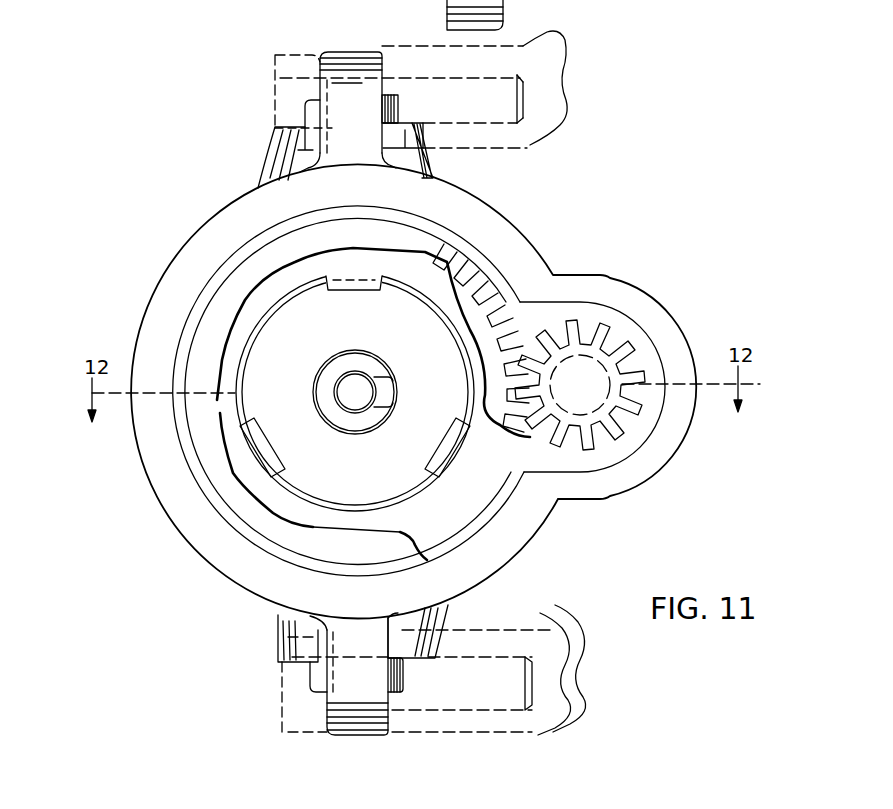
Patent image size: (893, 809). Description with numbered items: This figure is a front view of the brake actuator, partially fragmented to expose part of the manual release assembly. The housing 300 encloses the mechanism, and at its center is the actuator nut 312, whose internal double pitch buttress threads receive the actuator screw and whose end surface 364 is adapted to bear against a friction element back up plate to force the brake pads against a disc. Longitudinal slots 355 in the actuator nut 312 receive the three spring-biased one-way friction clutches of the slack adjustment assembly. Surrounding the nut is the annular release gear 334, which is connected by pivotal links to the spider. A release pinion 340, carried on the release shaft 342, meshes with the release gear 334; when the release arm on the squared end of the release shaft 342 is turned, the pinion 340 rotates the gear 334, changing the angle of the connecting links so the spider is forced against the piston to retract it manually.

The housing 300 is at (533, 534).
The actuator nut 312 is at (220, 418).
The release gear 334 is at (507, 293).
The release pinion 340 is at (590, 350).
The release shaft 342 is at (600, 367).
The longitudinal slots 355 is at (263, 458).
The end surface 364 is at (340, 494).